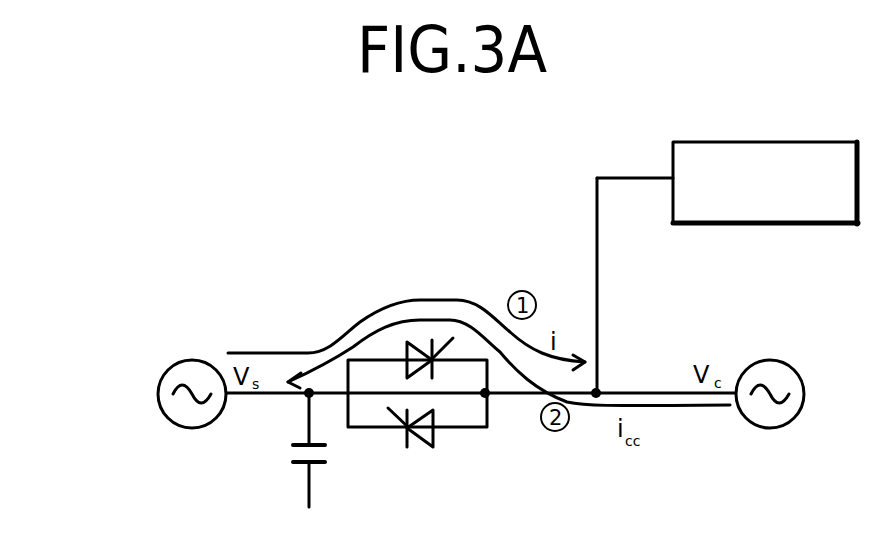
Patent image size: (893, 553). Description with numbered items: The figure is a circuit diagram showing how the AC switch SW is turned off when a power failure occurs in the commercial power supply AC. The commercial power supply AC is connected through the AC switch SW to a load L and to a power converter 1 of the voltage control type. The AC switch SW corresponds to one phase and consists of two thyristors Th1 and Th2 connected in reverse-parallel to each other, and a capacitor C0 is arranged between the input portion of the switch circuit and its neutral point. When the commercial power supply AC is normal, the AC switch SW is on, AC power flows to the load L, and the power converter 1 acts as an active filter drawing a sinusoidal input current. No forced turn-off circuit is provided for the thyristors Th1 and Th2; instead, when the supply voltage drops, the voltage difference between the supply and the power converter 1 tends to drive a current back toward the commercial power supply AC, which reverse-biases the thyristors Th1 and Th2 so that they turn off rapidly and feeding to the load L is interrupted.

The power converter 1 is at (805, 387).
The load L is at (807, 225).
The commercial power supply AC is at (160, 403).
The AC switch SW is at (368, 428).
The thyristor Th1 is at (433, 372).
The thyristor Th2 is at (420, 447).
The capacitor C0 is at (300, 458).